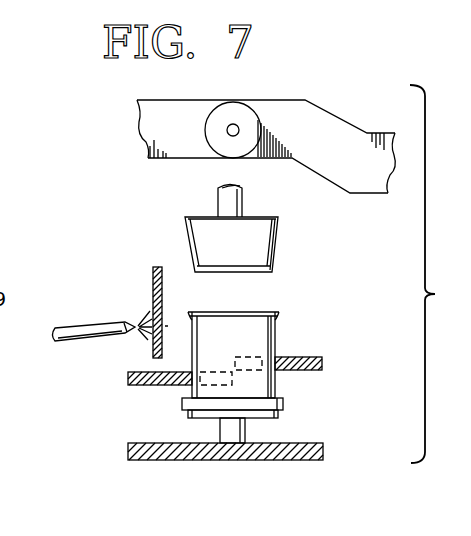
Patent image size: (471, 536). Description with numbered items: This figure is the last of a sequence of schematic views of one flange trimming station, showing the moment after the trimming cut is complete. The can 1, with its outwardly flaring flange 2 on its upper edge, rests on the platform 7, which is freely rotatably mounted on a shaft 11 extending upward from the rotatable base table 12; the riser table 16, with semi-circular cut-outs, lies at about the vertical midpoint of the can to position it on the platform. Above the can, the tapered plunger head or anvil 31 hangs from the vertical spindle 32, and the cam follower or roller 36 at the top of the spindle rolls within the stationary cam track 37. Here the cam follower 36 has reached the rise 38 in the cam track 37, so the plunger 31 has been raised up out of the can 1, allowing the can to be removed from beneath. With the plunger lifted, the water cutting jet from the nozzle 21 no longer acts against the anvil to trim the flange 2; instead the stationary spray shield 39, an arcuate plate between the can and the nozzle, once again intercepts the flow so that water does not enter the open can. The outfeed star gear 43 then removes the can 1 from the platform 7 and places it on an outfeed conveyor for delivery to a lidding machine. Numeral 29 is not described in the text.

The can 1 is at (258, 339).
The flange 2 is at (275, 318).
The platform 7 is at (285, 401).
The shaft 11 is at (245, 432).
The base table 12 is at (312, 446).
The riser table 16 is at (316, 360).
The nozzle 21 is at (128, 320).
The burner 29 is at (80, 328).
The plunger head 31 is at (264, 240).
The vertical spindle 32 is at (242, 196).
The cam follower 36 is at (240, 102).
The cam track 37 is at (343, 128).
The rise 38 is at (277, 108).
The spray shield 39 is at (153, 275).
The outfeed star gear 43 is at (137, 388).